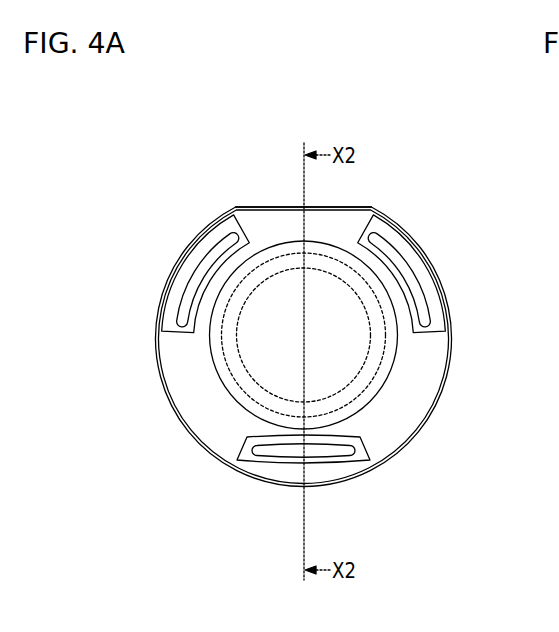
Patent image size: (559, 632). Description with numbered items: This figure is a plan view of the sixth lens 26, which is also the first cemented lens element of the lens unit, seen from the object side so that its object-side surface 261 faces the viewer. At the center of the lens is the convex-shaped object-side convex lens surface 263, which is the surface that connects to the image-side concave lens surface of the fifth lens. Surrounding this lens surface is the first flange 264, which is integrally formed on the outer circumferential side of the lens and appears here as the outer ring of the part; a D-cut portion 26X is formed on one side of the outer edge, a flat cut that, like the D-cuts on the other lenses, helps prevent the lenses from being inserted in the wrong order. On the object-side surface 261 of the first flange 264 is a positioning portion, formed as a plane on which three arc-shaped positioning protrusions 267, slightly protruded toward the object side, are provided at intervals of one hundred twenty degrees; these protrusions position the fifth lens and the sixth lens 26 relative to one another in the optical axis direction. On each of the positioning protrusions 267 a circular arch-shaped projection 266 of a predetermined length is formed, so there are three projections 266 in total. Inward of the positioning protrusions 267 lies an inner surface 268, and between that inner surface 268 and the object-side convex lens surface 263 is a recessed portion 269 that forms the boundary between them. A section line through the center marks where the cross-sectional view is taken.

The sixth lens 26 is at (163, 142).
The D-cut portion 26X is at (262, 206).
The object-side surface 261 is at (228, 437).
The object-side convex lens surface 263 is at (350, 360).
The first flange 264 is at (400, 428).
The projections 266 is at (198, 272).
The positioning protrusions 267 is at (172, 305).
The inner surface 268 is at (248, 256).
The recessed portion 269 is at (322, 252).